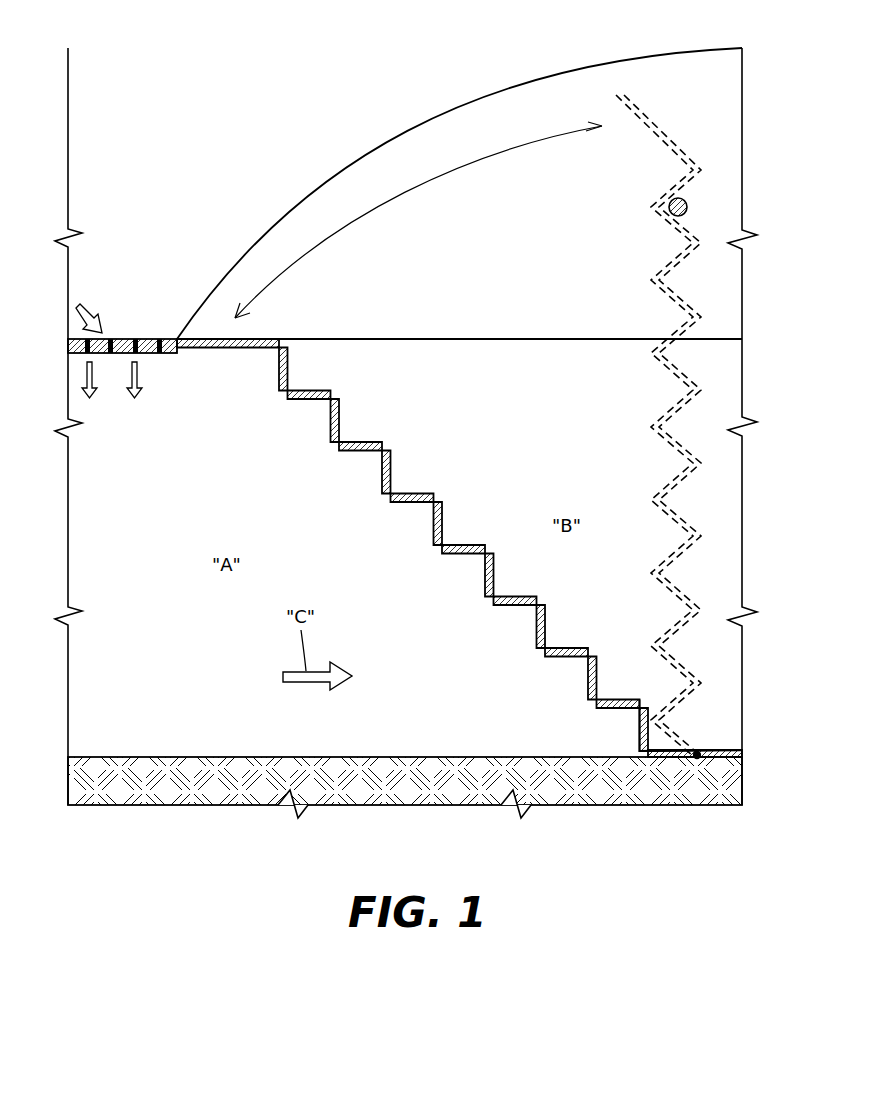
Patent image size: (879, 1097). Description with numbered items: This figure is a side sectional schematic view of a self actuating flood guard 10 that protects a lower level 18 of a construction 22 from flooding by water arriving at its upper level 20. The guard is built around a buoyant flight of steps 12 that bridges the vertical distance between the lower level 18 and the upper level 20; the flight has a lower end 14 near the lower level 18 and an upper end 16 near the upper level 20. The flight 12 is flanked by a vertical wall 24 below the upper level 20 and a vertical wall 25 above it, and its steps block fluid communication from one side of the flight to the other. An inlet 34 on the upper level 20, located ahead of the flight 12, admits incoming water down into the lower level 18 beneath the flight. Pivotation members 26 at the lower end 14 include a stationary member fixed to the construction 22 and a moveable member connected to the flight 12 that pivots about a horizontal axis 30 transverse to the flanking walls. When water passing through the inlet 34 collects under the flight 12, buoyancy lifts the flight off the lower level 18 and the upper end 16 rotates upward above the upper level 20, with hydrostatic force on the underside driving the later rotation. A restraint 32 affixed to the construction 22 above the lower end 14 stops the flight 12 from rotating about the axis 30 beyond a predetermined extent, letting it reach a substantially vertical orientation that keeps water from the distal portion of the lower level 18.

The self actuating flood guard 10 is at (502, 62).
The buoyant flight of steps 12 is at (433, 490).
The lower end 14 is at (663, 750).
The upper end 16 is at (258, 339).
The lower level 18 is at (193, 757).
The upper level 20 is at (444, 339).
The construction 22 is at (732, 485).
The vertical wall 24 is at (540, 425).
The vertical wall 25 is at (502, 228).
The pivotation members 26 is at (697, 753).
The horizontal axis 30 is at (700, 755).
The restraint 32 is at (687, 207).
The inlet 34 is at (125, 339).